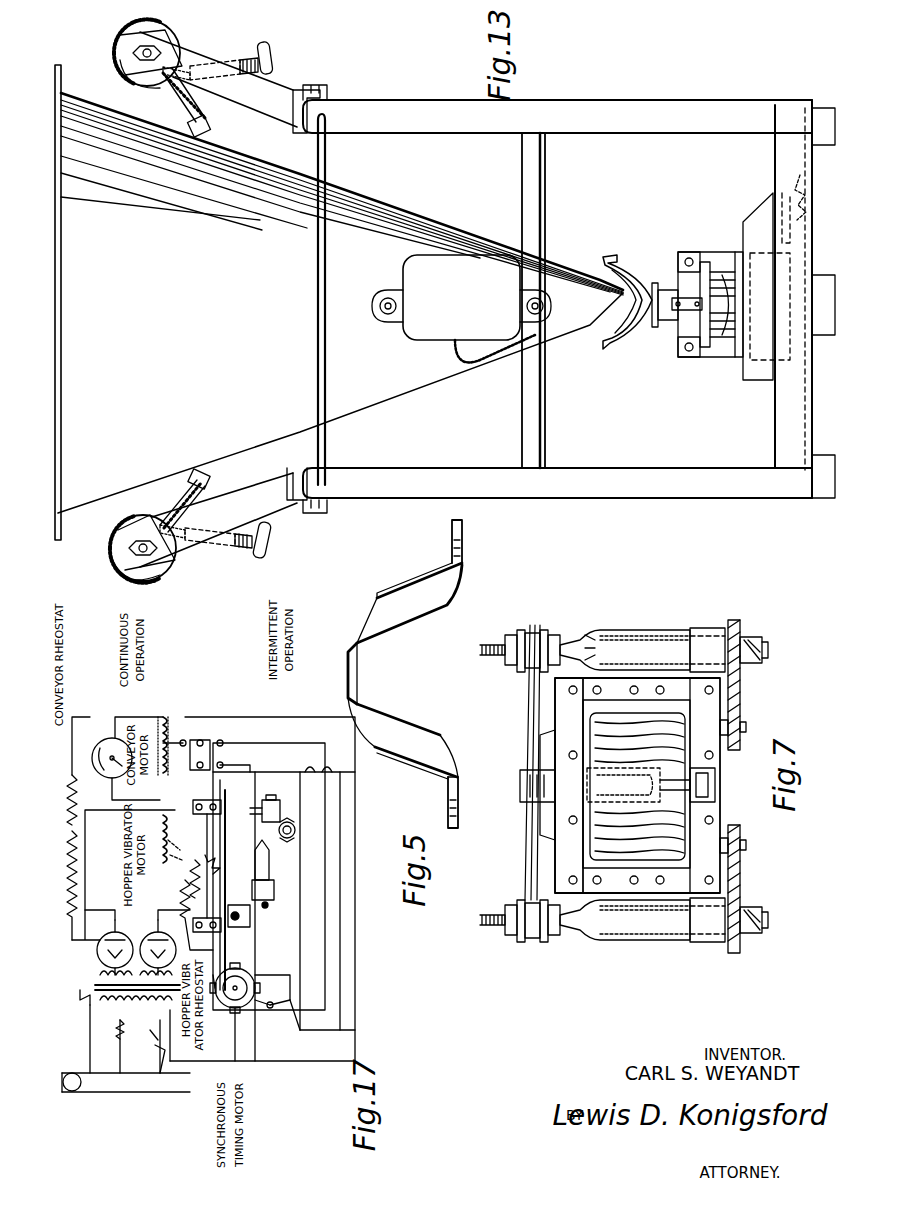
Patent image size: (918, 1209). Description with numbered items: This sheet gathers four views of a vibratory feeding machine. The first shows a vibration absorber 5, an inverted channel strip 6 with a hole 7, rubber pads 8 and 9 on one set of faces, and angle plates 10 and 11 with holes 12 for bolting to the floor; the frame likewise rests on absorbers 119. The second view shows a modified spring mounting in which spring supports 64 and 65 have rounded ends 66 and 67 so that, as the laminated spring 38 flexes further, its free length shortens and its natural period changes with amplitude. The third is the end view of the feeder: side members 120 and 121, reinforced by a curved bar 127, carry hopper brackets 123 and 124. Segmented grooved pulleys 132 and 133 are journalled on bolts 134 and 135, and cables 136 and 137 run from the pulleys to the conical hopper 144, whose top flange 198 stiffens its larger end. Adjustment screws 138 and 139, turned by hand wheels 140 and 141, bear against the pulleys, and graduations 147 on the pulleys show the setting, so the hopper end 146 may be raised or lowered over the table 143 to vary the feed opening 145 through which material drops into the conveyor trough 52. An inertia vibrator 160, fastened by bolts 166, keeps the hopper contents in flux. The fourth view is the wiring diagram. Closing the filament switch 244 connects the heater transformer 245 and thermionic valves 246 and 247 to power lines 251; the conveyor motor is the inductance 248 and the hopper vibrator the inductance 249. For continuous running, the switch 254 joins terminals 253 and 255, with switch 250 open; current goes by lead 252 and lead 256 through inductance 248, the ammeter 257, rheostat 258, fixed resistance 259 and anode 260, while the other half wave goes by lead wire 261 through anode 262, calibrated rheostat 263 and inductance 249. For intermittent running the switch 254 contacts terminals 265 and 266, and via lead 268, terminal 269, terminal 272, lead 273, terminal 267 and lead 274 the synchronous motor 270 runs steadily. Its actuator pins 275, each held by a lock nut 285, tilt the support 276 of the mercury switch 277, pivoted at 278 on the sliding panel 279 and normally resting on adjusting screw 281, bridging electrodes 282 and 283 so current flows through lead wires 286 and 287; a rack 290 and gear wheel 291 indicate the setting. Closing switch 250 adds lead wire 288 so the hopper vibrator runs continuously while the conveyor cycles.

In FIG. 13, the vibration absorber 5 is at (768, 408).
In FIG. 5, the inverted channel strip 6 is at (350, 655).
In FIG. 5, the hole 7 is at (348, 683).
In FIG. 5, the rubber pad 8 is at (405, 735).
In FIG. 5, the rubber pad 9 is at (420, 617).
In FIG. 5, the angle plate 10 is at (400, 758).
In FIG. 5, the angle plate 11 is at (420, 577).
In FIG. 5, the holes 12 is at (465, 545).
In FIG. 7, the spring 38 is at (530, 708).
In FIG. 13, the conveyor trough 52 is at (648, 340).
In FIG. 7, the spring support 64 is at (518, 942).
In FIG. 7, the spring support 65 is at (520, 628).
In FIG. 7, the rounded end 66 is at (545, 630).
In FIG. 7, the rounded end 67 is at (542, 945).
In FIG. 13, the vibration absorbers 119 is at (826, 145).
In FIG. 13, the side member 120 is at (568, 498).
In FIG. 13, the side member 121 is at (577, 100).
In FIG. 13, the hopper bracket 123 is at (278, 503).
In FIG. 13, the hopper bracket 124 is at (278, 94).
In FIG. 13, the curved bar or pipe 127 is at (326, 313).
In FIG. 13, the segmented grooved pulley 132 is at (162, 565).
In FIG. 13, the segmented grooved pulley 133 is at (170, 38).
In FIG. 13, the bolt 134 is at (130, 548).
In FIG. 13, the bolt 135 is at (115, 55).
In FIG. 13, the cable 136 is at (197, 485).
In FIG. 13, the cable 137 is at (140, 78).
In FIG. 13, the adjustment screw 138 is at (243, 540).
In FIG. 13, the adjustment screw 139 is at (248, 58).
In FIG. 13, the hand wheel 140 is at (262, 555).
In FIG. 13, the hand wheel 141 is at (267, 42).
In FIG. 13, the table or platform 143 is at (630, 265).
In FIG. 13, the conical hopper 144 is at (232, 320).
In FIG. 13, the feed opening 145 is at (612, 325).
In FIG. 13, the hopper end 146 is at (606, 266).
In FIG. 13, the graduations 147 is at (205, 128).
In FIG. 13, the vibrator 160 is at (456, 320).
In FIG. 13, the bolts 166 is at (388, 315).
In FIG. 13, the top flange 198 is at (63, 315).
In FIG. 17, the filament excitation switch 244 is at (132, 1063).
In FIG. 17, the heater transformer 245 is at (127, 1033).
In FIG. 17, the thermionic valve 246 is at (108, 932).
In FIG. 17, the thermionic valve 247 is at (158, 932).
In FIG. 17, the inductance 248 is at (160, 720).
In FIG. 17, the inductance 249 is at (152, 828).
In FIG. 17, the switch 250 is at (112, 778).
In FIG. 17, the power lines 251 is at (85, 1100).
In FIG. 17, the lead wire 252 is at (290, 1061).
In FIG. 17, the terminal 253 is at (183, 738).
In FIG. 17, the switch 254 is at (200, 738).
In FIG. 17, the terminal 255 is at (220, 738).
In FIG. 17, the lead 256 is at (175, 841).
In FIG. 17, the ammeter 257 is at (108, 740).
In FIG. 17, the rheostat 258 is at (61, 800).
In FIG. 17, the fixed resistance 259 is at (61, 885).
In FIG. 17, the anode 260 is at (115, 932).
In FIG. 17, the lead wire 261 is at (73, 1013).
In FIG. 17, the anode 262 is at (111, 942).
In FIG. 17, the calibrated rheostat 263 is at (189, 915).
In FIG. 17, the terminal 265 is at (220, 760).
In FIG. 17, the terminal 266 is at (225, 765).
In FIG. 17, the terminal 267 is at (206, 761).
In FIG. 17, the lead 268 is at (268, 1026).
In FIG. 17, the terminal 269 is at (283, 1026).
In FIG. 17, the synchronous motor 270 is at (235, 1007).
In FIG. 17, the terminal 272 is at (283, 986).
In FIG. 17, the lead 273 is at (320, 901).
In FIG. 17, the lead 274 is at (100, 810).
In FIG. 17, the switch actuator pins 275 is at (220, 1034).
In FIG. 17, the support 276 is at (210, 965).
In FIG. 17, the mercury switch 277 is at (272, 858).
In FIG. 17, the pivot 278 is at (236, 915).
In FIG. 17, the panel 279 is at (231, 885).
In FIG. 17, the adjusting screw 281 is at (261, 802).
In FIG. 17, the electrode 282 is at (270, 905).
In FIG. 17, the electrode 283 is at (272, 895).
In FIG. 17, the lock nut 285 is at (201, 968).
In FIG. 17, the lead wire 286 is at (323, 779).
In FIG. 17, the lead wire 287 is at (300, 1026).
In FIG. 17, the lead wire 288 is at (214, 857).
In FIG. 17, the rack 290 is at (195, 886).
In FIG. 17, the gear wheel 291 is at (203, 851).